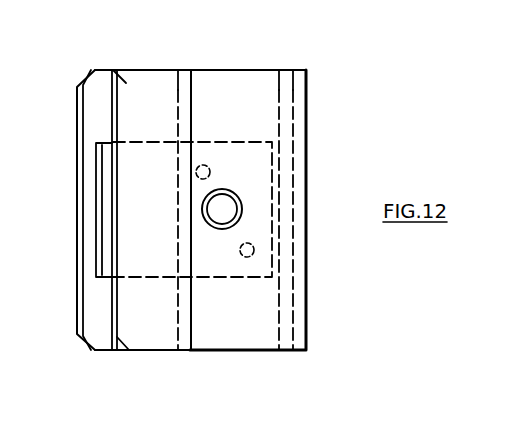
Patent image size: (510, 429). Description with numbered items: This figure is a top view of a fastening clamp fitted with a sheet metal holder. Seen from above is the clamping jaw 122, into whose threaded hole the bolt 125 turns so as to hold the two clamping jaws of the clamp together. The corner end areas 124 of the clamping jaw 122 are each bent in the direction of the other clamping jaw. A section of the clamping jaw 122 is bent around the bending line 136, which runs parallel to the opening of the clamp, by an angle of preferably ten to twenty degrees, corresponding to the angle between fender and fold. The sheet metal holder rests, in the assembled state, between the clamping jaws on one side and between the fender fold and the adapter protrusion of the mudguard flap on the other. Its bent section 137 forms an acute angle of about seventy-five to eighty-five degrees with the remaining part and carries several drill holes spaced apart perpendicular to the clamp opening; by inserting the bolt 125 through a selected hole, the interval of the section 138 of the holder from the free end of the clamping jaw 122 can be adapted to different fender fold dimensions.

The clamping jaw 122 is at (152, 70).
The corner end areas 124 is at (90, 70).
The bolt 125 is at (223, 190).
The bending line 136 is at (180, 291).
The bent section of sheet metal holder 137 is at (96, 199).
The section of sheet metal holder 138 is at (203, 142).